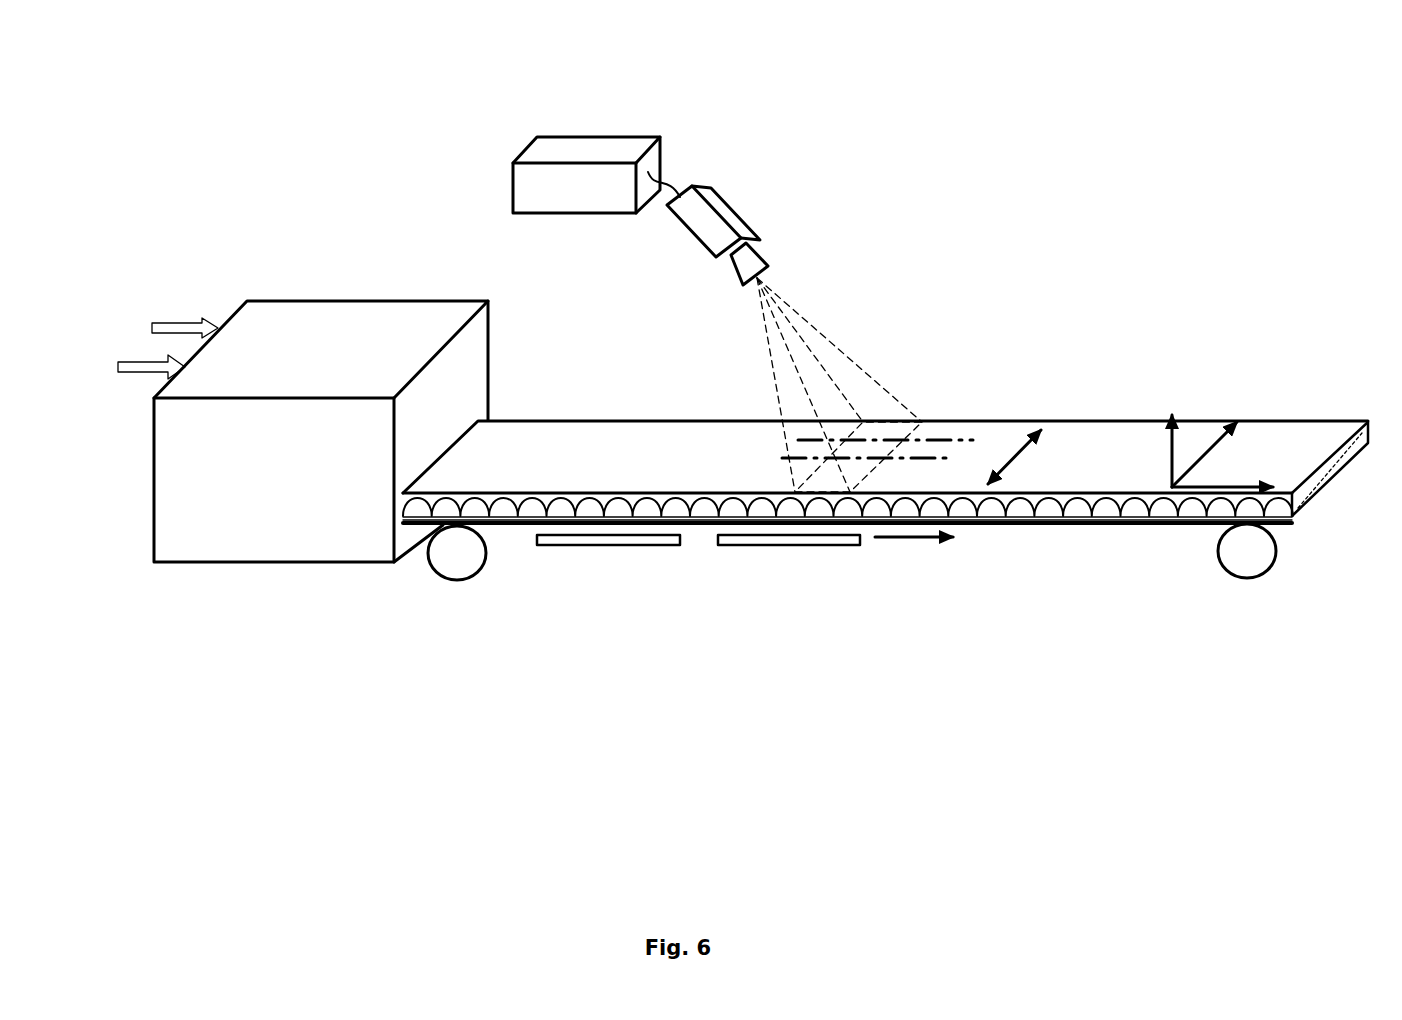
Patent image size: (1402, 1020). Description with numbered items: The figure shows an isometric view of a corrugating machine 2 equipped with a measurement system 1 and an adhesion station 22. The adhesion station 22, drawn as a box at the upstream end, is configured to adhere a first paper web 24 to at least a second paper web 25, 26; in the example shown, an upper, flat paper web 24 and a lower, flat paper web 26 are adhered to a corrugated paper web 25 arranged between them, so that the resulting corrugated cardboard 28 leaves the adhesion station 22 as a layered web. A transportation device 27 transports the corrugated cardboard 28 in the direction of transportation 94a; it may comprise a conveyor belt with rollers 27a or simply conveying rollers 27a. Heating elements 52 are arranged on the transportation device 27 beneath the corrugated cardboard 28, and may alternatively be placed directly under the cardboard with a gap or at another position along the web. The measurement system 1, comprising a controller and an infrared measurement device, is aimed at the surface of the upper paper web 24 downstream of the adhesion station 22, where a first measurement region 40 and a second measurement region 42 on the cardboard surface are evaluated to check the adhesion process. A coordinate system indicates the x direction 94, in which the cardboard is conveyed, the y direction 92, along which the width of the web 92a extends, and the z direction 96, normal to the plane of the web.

The measurement system 1 is at (699, 141).
The corrugating machine 2 is at (1132, 148).
The adhesion station 22 is at (326, 301).
The first paper web 24 is at (165, 326).
The corrugated paper web 25 is at (156, 370).
The lower flat paper web 26 is at (502, 528).
The transportation device 27 is at (872, 527).
The rollers 27a is at (432, 563).
The corrugated cardboard 28 is at (681, 470).
The first measurement region 40 is at (942, 458).
The second measurement region 42 is at (921, 440).
The heating elements 52 is at (638, 546).
The y direction 92 is at (1203, 465).
The width of the web 92a is at (1030, 523).
The x direction 94 is at (1263, 482).
The direction of transportation 94a is at (933, 538).
The z direction 96 is at (1168, 448).